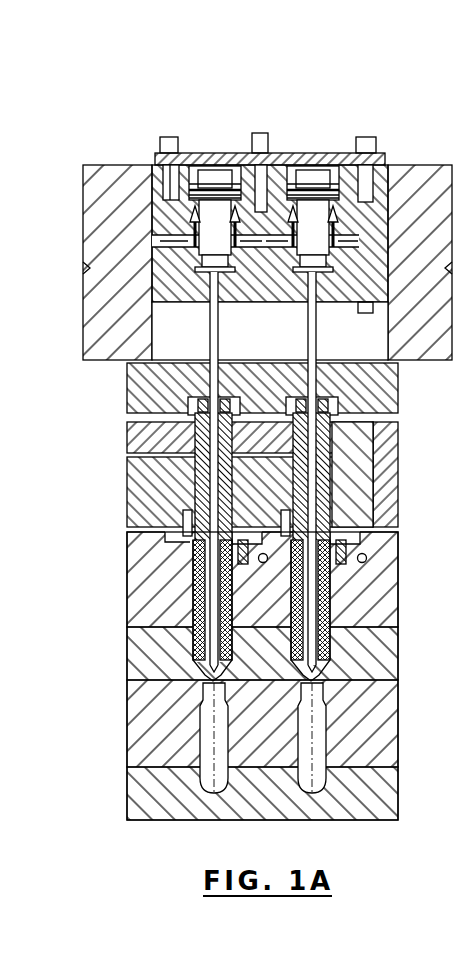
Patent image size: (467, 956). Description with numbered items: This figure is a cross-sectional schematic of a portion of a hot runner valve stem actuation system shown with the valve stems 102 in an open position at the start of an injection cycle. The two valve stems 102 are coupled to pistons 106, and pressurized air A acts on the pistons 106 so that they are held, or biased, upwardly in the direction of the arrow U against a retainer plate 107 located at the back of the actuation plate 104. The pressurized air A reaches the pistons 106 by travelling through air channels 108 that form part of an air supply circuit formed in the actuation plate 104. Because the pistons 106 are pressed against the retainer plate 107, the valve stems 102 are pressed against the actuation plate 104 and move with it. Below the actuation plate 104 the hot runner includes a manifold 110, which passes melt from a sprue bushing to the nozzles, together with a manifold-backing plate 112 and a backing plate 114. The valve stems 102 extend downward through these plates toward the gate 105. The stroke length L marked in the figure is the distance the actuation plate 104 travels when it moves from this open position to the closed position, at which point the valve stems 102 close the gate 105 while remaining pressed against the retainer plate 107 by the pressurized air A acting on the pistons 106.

The valve stem 102 is at (308, 332).
The actuation plate 104 is at (277, 302).
The gate 105 is at (205, 686).
The piston 106 is at (285, 120).
The retainer plate 107 is at (198, 157).
The air channel 108 is at (426, 198).
The manifold 110 is at (130, 492).
The manifold-backing plate 112 is at (113, 197).
The backing plate 114 is at (130, 386).
The pressurized air A is at (187, 212).
The upward direction arrow U is at (278, 205).
The stroke length L is at (367, 317).